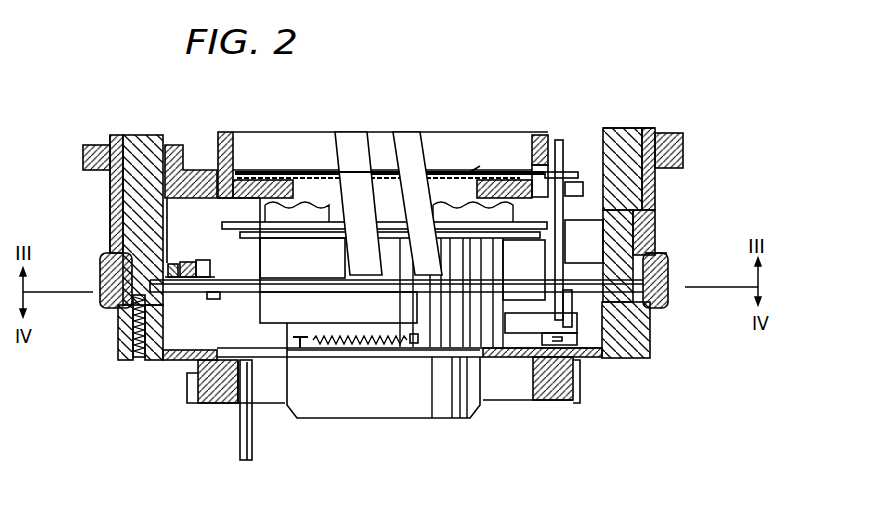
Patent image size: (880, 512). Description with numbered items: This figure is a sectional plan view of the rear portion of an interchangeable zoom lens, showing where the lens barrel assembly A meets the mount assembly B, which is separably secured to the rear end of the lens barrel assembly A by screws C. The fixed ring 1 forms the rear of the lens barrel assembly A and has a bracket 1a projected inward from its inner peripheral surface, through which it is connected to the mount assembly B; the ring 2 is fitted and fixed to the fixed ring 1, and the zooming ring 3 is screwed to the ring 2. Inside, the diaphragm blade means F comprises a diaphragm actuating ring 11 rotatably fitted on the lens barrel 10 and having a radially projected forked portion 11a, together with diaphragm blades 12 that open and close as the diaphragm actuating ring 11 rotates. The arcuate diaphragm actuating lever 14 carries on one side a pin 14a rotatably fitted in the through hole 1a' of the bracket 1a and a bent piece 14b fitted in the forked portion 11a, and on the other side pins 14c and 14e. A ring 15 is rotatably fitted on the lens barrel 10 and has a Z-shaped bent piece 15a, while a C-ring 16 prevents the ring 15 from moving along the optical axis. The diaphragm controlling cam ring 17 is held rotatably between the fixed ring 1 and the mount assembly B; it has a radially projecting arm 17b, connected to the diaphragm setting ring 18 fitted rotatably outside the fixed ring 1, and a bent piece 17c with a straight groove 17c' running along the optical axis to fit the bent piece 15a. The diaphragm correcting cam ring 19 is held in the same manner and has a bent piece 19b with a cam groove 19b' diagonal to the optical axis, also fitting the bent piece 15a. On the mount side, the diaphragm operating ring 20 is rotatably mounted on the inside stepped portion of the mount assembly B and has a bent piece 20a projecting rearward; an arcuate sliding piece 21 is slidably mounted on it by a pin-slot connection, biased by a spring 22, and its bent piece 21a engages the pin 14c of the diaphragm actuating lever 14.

The fixed ring 1 is at (640, 193).
The bracket 1a is at (212, 204).
The through hole 1a' is at (196, 249).
The ring 2 is at (625, 127).
The zooming ring 3 is at (677, 137).
The lens barrel 10 is at (541, 133).
The diaphragm actuating ring 11 is at (497, 171).
The forked portion 11a is at (578, 171).
The diaphragm blades 12 is at (263, 180).
The diaphragm actuating lever 14 is at (239, 275).
The pin 14a is at (193, 260).
The bent piece 14b is at (560, 138).
The pin 14c is at (565, 305).
The pin 14e is at (213, 299).
The ring 15 is at (543, 225).
The bent piece 15a is at (393, 178).
The C-ring 16 is at (525, 234).
The diaphragm controlling cam ring 17 is at (332, 286).
The arm 17b is at (667, 253).
The bent piece 17c is at (328, 258).
The straight groove 17c' is at (358, 187).
The diaphragm setting ring 18 is at (100, 270).
The diaphragm correcting cam ring 19 is at (287, 283).
The bent piece 19b is at (317, 156).
The cam groove 19b' is at (412, 187).
The diaphragm operating ring 20 is at (293, 355).
The bent piece 20a is at (252, 459).
The sliding piece 21 is at (420, 362).
The bent piece 21a is at (577, 330).
The spring 22 is at (338, 344).
The lens barrel assembly A is at (108, 213).
The mount assembly B is at (112, 354).
The screws C is at (115, 335).
The diaphragm blade means F is at (470, 171).